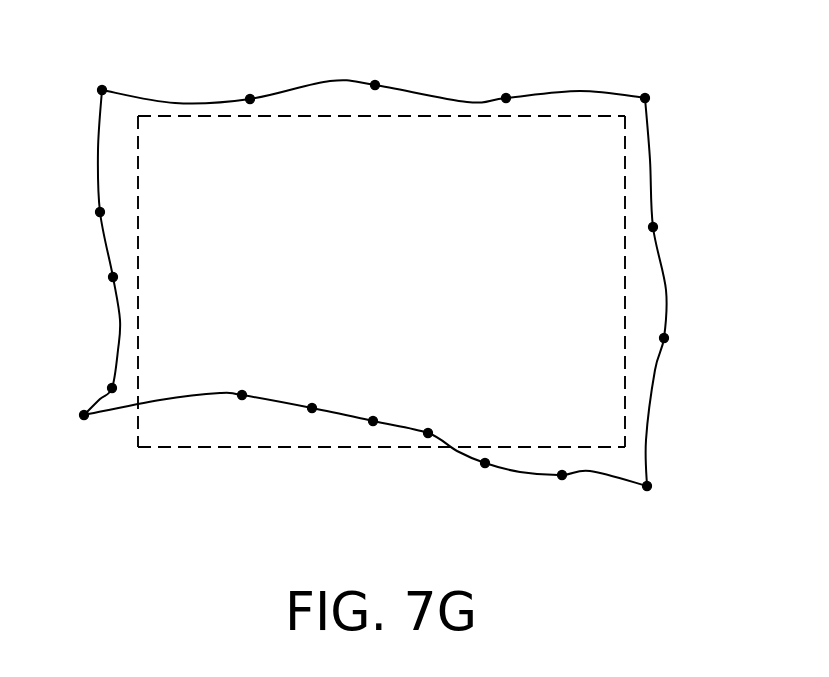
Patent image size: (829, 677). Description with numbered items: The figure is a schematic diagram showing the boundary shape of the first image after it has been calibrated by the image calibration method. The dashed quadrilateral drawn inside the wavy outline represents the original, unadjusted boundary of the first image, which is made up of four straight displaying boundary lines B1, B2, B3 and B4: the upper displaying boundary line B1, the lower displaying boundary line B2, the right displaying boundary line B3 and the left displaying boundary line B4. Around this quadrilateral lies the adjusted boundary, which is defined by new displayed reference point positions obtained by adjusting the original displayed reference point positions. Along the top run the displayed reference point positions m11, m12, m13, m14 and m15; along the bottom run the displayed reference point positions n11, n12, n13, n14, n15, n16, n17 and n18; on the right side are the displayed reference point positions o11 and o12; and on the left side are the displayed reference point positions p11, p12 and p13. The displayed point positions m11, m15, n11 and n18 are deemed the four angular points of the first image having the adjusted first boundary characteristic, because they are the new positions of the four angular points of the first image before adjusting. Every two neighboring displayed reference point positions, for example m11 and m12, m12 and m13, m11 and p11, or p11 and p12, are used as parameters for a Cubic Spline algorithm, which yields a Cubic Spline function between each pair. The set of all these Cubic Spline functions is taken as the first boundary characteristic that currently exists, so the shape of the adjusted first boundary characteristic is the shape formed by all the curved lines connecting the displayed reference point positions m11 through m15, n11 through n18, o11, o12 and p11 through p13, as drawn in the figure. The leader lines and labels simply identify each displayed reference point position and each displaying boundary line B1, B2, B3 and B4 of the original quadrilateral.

The displayed reference point position m11 is at (102, 86).
The displayed reference point position m12 is at (250, 95).
The displayed reference point position m13 is at (375, 81).
The displayed reference point position m14 is at (506, 94).
The displayed reference point position m15 is at (645, 94).
The displayed reference point position n11 is at (83, 420).
The displayed reference point position n12 is at (242, 400).
The displayed reference point position n13 is at (312, 413).
The displayed reference point position n14 is at (373, 426).
The displayed reference point position n15 is at (428, 438).
The displayed reference point position n16 is at (485, 468).
The displayed reference point position n17 is at (562, 480).
The displayed reference point position n18 is at (647, 491).
The displayed reference point position o11 is at (659, 228).
The displayed reference point position o12 is at (670, 338).
The displayed reference point position p11 is at (95, 212).
The displayed reference point position p12 is at (108, 277).
The displayed reference point position p13 is at (107, 387).
The displaying boundary line B1 is at (381, 117).
The displaying boundary line B2 is at (533, 447).
The displaying boundary line B3 is at (625, 271).
The displaying boundary line B4 is at (138, 275).